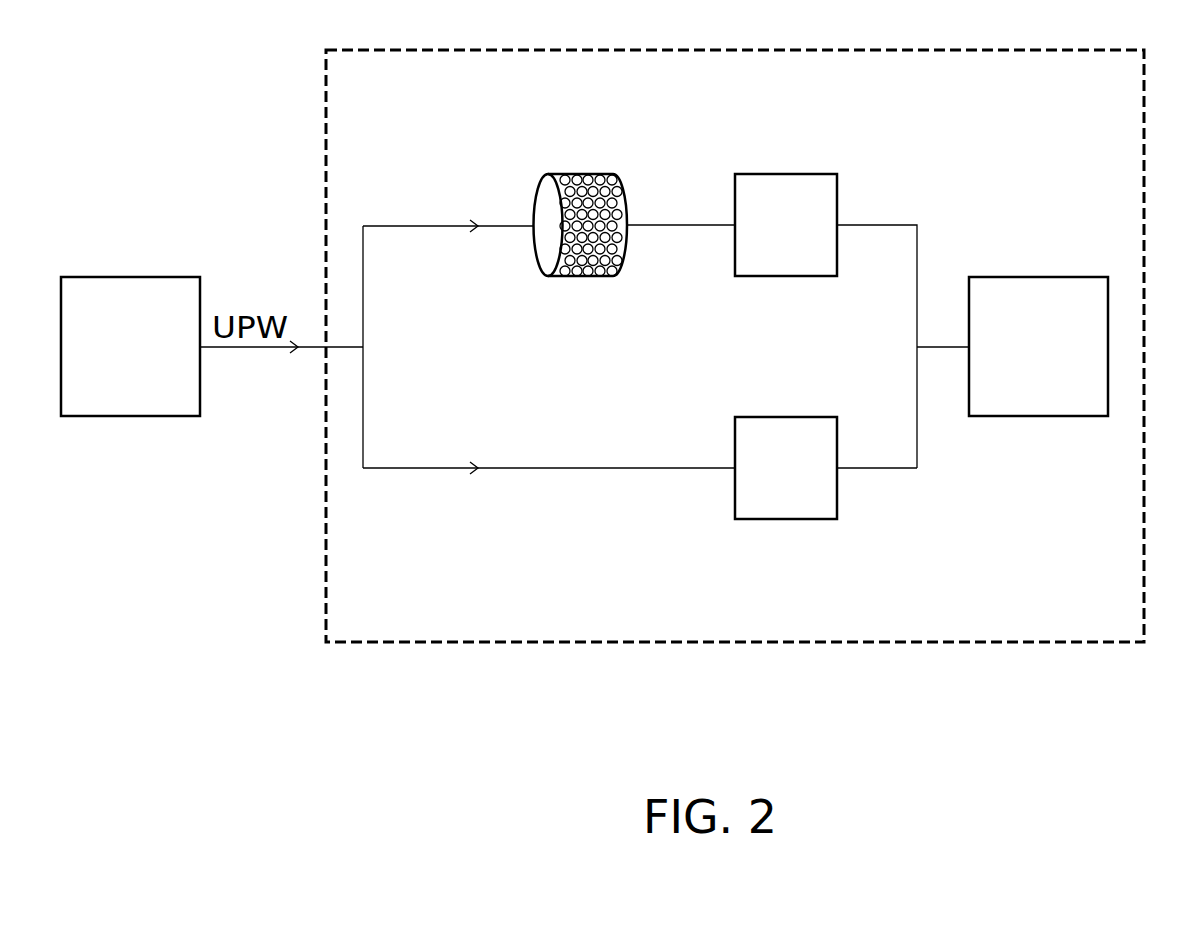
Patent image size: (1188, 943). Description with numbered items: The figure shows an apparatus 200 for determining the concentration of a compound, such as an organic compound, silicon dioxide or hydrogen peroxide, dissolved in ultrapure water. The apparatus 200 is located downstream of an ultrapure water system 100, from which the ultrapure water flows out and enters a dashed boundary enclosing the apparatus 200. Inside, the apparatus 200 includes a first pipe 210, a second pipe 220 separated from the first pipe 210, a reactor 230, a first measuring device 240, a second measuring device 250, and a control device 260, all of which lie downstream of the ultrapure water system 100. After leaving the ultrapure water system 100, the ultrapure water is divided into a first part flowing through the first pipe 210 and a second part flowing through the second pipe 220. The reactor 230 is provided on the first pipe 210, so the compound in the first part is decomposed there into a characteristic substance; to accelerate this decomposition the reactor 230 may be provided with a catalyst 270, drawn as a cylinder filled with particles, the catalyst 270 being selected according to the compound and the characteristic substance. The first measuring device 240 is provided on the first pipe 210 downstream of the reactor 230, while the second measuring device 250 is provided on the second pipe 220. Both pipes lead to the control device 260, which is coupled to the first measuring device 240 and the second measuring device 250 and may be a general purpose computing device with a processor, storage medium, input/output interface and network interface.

The ultrapure water system 100 is at (131, 277).
The apparatus 200 is at (736, 50).
The first pipe 210 is at (500, 226).
The second pipe 220 is at (580, 468).
The reactor 230 is at (580, 174).
The first measuring device 240 is at (787, 174).
The second measuring device 250 is at (787, 519).
The control device 260 is at (1040, 277).
The catalyst 270 is at (587, 276).